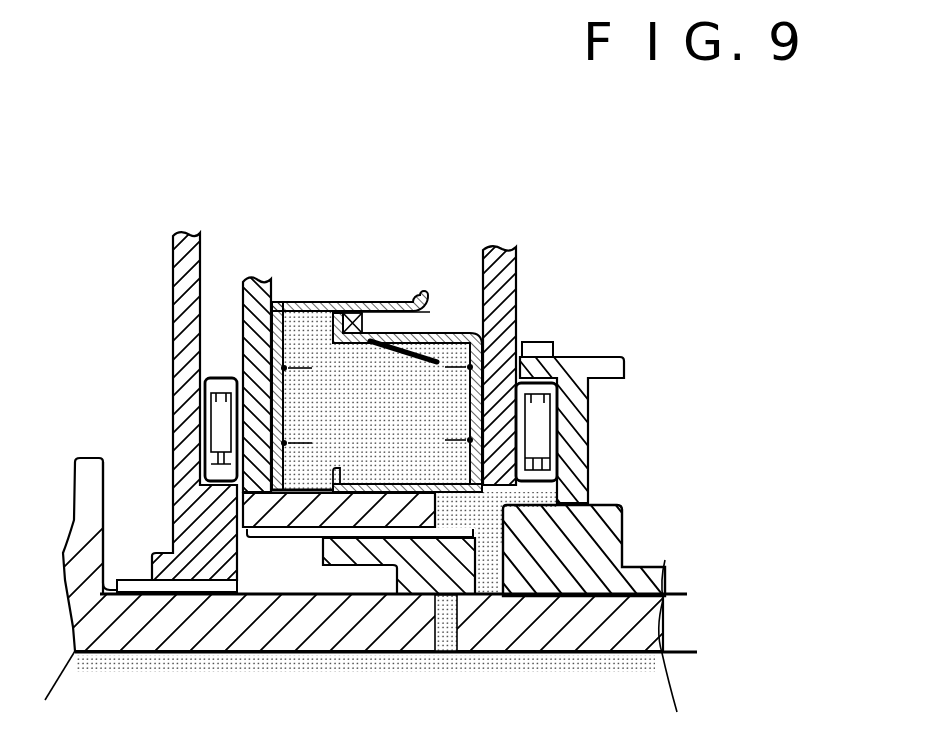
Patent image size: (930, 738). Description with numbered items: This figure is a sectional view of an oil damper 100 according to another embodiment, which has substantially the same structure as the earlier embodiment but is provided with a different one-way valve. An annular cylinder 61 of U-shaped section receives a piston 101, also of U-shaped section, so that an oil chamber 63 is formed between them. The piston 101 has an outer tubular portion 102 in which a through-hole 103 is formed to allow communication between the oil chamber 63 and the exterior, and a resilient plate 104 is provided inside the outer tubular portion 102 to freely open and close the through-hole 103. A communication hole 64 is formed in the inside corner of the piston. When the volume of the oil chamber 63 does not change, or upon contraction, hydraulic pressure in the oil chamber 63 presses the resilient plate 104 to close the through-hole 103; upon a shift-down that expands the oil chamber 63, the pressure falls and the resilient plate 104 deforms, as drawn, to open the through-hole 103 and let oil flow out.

The oil damper 100 is at (446, 294).
The annular cylinder 61 is at (316, 302).
The oil chamber 63 is at (328, 400).
The piston 101 is at (393, 331).
The outer tubular portion 102 is at (455, 332).
The through-hole 103 is at (422, 332).
The resilient plate 104 is at (557, 348).
The communication hole 64 is at (525, 511).